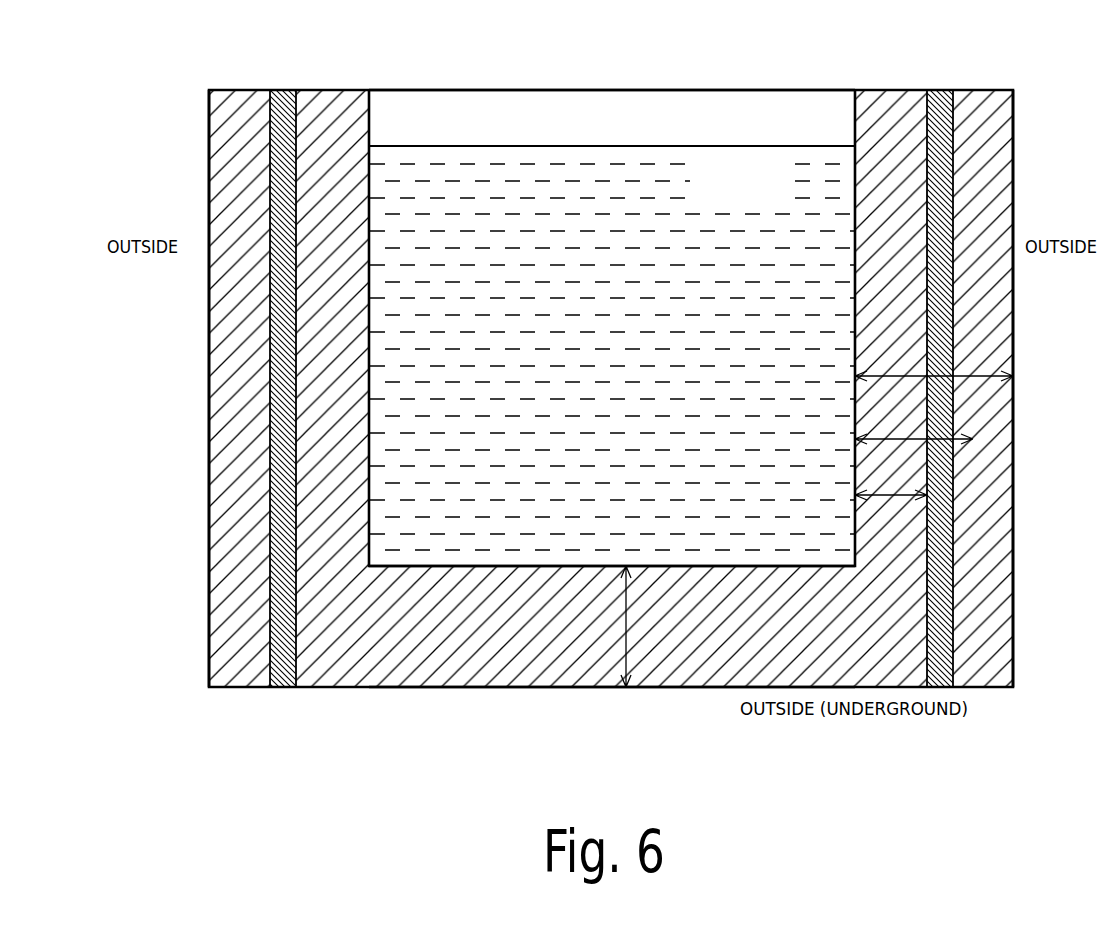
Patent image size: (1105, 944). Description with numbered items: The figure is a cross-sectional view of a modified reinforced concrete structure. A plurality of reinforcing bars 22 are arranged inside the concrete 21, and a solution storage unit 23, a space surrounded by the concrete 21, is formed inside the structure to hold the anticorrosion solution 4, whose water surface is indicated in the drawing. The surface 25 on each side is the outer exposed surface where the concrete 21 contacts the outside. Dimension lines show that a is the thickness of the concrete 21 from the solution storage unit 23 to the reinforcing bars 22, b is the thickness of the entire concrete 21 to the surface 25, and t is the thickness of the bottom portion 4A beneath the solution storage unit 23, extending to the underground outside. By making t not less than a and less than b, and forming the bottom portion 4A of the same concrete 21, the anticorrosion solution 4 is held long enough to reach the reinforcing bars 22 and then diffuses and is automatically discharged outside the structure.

The anticorrosion solution 4 is at (617, 146).
The bottom portion of water tank 4A is at (599, 680).
The concrete 21 is at (885, 96).
The reinforcing bars 22 is at (288, 89).
The solution storage unit 23 is at (513, 89).
The surface 25 is at (209, 419).